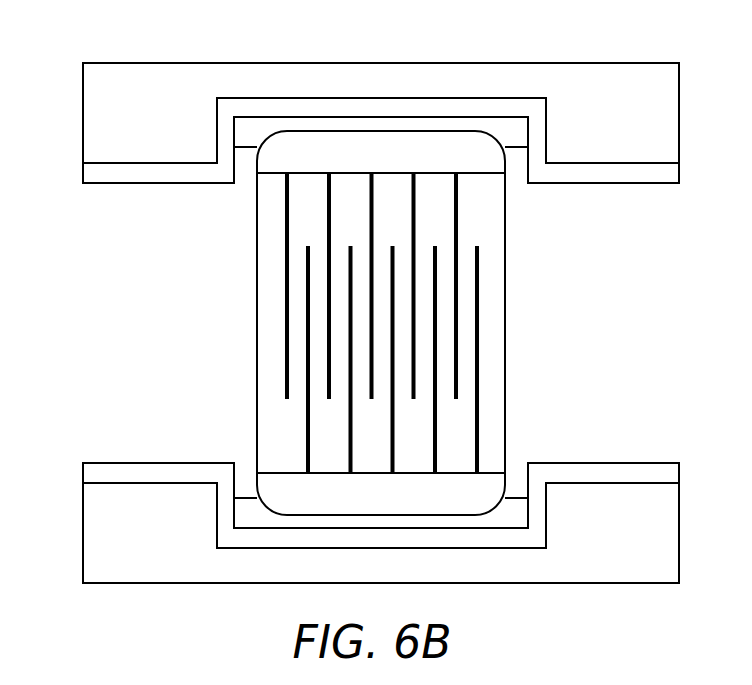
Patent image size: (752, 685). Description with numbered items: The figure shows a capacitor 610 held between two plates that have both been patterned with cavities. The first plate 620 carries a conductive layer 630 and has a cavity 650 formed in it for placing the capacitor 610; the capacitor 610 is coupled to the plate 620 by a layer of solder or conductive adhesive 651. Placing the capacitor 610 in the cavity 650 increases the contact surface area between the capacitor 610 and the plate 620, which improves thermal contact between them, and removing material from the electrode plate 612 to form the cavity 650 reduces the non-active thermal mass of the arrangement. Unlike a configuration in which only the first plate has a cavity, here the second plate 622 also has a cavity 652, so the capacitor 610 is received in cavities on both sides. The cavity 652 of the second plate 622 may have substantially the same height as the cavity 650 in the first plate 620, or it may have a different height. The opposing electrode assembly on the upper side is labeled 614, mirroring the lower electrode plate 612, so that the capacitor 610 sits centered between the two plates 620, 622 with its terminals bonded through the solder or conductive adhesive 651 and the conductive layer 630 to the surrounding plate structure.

The capacitor 610 is at (505, 243).
The electrode plate 612 is at (362, 508).
The second electrode assembly 614 is at (372, 125).
The plate 620 is at (83, 522).
The second plate 622 is at (83, 97).
The conductive layer 630 is at (162, 462).
The cavity 650 is at (245, 472).
The layer of solder or conductive adhesive 651 is at (508, 520).
The cavity 652 is at (245, 168).